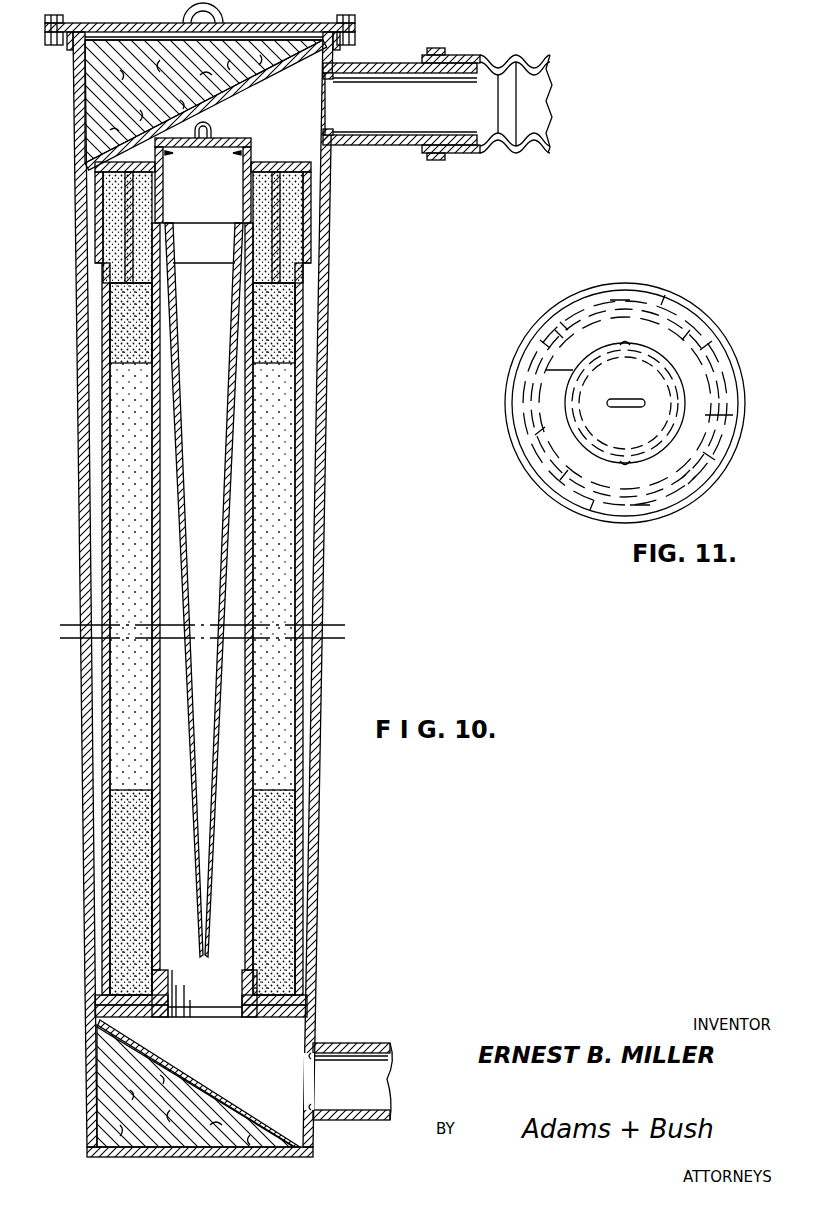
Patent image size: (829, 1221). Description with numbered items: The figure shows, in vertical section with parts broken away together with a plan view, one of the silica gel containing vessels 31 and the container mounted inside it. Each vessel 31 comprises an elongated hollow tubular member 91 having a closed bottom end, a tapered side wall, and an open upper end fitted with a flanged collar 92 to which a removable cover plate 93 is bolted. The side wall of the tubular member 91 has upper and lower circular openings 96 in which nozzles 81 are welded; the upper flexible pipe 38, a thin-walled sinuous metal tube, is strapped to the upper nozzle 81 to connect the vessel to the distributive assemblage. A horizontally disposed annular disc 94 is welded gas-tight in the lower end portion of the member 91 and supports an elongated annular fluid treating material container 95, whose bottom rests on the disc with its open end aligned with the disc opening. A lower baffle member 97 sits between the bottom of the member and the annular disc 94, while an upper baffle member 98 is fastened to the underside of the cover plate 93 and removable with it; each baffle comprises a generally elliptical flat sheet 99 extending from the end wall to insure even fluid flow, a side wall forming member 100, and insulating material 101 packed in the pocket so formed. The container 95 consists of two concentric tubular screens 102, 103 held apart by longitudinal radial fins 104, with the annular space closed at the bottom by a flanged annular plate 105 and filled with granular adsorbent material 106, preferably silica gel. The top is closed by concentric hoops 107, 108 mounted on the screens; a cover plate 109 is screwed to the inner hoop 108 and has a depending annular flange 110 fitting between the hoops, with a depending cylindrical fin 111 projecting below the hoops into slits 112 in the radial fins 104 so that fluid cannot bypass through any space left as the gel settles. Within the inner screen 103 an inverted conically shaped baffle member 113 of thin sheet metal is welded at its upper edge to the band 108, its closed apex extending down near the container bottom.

In FIG. 10, the adsorbent material containing vessel 31 is at (329, 542).
In FIG. 10, the upper flexible pipe 38 is at (492, 150).
In FIG. 10, the nozzle 81 is at (362, 146).
In FIG. 10, the tubular member 91 is at (322, 472).
In FIG. 10, the flanged collar 92 is at (338, 50).
In FIG. 10, the cover plate 93 is at (247, 24).
In FIG. 10, the annular disc 94 is at (262, 1018).
In FIG. 10, the fluid treating material container 95 is at (306, 378).
In FIG. 11, the fluid treating material container 95 is at (579, 276).
In FIG. 10, the circular opening 96 is at (322, 84).
In FIG. 10, the lower baffle member 97 is at (191, 1078).
In FIG. 10, the upper baffle member 98 is at (250, 84).
In FIG. 10, the elliptical-shaped flat sheet 99 is at (204, 99).
In FIG. 10, the side wall forming member 100 is at (76, 100).
In FIG. 10, the insulating material 101 is at (100, 75).
In FIG. 10, the outer tubular screen 102 is at (108, 446).
In FIG. 10, the inner tubular screen 103 is at (158, 350).
In FIG. 11, the longitudinal radial fin 104 is at (722, 337).
In FIG. 10, the flanged annular plate 105 is at (118, 993).
In FIG. 10, the granular adsorbent material 106 is at (283, 937).
In FIG. 10, the outer hoop 107 is at (309, 215).
In FIG. 11, the outer hoop 107 is at (735, 452).
In FIG. 10, the inner hoop 108 is at (166, 212).
In FIG. 10, the cover plate 109 is at (222, 140).
In FIG. 11, the cover plate 109 is at (626, 403).
In FIG. 10, the depending annular flange 110 is at (256, 166).
In FIG. 10, the depending cylindrical fin 111 is at (278, 238).
In FIG. 11, the depending cylindrical fin 111 is at (742, 365).
In FIG. 11, the slit 112 is at (532, 470).
In FIG. 10, the conically shaped baffle member 113 is at (205, 790).